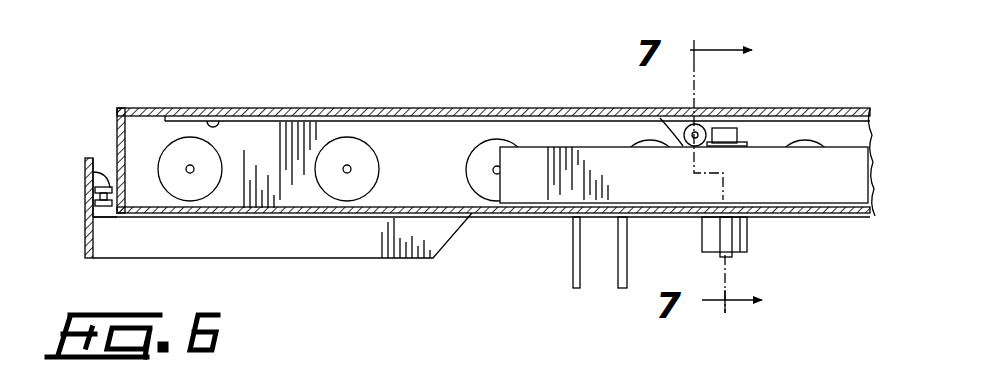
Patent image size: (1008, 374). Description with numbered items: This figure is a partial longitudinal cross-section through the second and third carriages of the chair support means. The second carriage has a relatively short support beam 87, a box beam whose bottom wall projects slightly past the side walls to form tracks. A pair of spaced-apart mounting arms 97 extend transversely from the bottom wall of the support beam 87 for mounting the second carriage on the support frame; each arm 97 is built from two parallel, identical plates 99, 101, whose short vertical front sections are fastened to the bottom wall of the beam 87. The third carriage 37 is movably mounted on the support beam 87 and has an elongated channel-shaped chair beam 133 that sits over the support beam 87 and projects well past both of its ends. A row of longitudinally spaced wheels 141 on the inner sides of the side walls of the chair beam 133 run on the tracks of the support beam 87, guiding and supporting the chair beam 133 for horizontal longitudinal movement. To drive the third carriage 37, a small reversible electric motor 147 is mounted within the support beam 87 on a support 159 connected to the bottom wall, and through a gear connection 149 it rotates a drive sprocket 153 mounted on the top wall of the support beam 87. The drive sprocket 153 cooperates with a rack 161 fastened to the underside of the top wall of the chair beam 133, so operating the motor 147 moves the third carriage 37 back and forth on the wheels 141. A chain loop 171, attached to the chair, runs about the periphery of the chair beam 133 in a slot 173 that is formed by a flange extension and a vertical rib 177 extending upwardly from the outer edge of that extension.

The third carriage 37 is at (349, 76).
The support beam 87 is at (572, 145).
The mounting arm 97 is at (571, 278).
The plate 99 is at (573, 246).
The plate 101 is at (618, 284).
The chair beam 133 is at (428, 105).
The wheels 141 is at (818, 143).
The electric motor 147 is at (752, 235).
The gear connection 149 is at (745, 142).
The drive sprocket 153 is at (660, 118).
The support 159 is at (722, 233).
The rack 161 is at (207, 119).
The chain loop 171 is at (93, 178).
The slot 173 is at (100, 138).
The vertical rib 177 is at (88, 190).